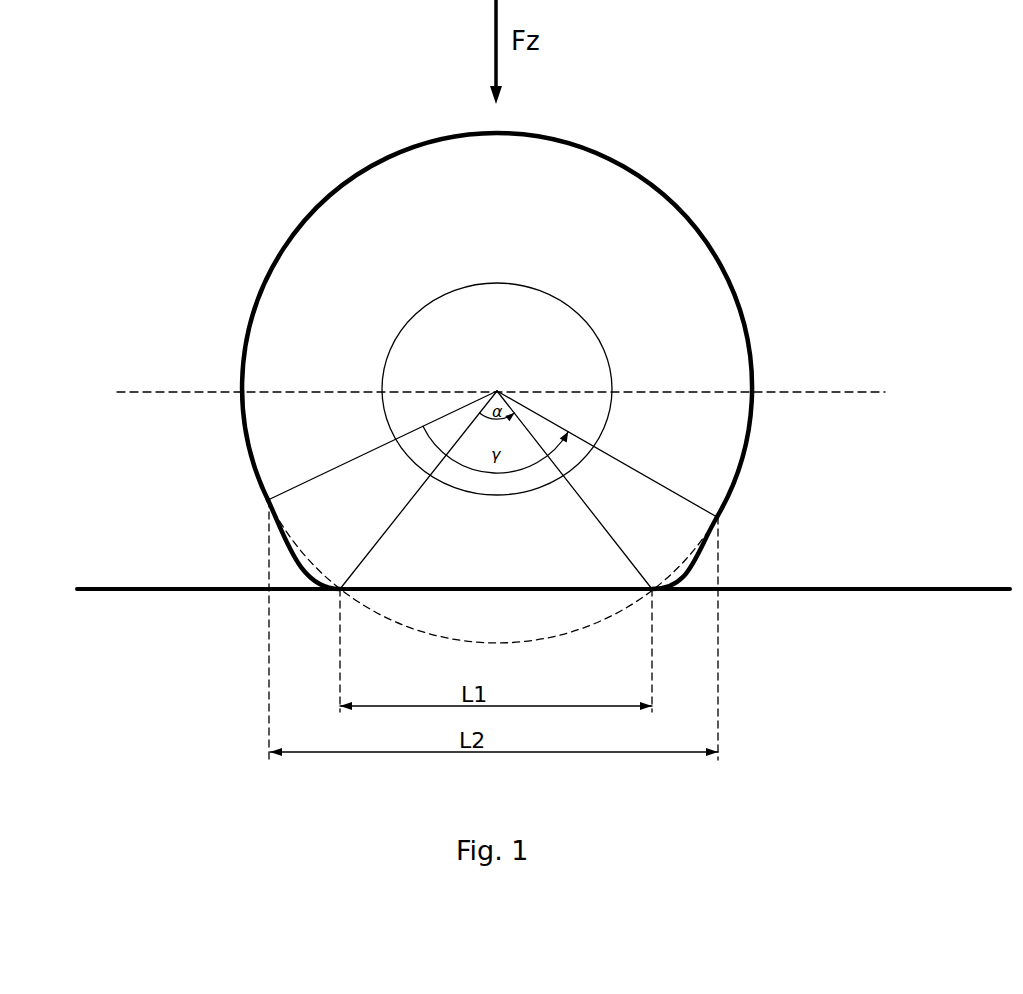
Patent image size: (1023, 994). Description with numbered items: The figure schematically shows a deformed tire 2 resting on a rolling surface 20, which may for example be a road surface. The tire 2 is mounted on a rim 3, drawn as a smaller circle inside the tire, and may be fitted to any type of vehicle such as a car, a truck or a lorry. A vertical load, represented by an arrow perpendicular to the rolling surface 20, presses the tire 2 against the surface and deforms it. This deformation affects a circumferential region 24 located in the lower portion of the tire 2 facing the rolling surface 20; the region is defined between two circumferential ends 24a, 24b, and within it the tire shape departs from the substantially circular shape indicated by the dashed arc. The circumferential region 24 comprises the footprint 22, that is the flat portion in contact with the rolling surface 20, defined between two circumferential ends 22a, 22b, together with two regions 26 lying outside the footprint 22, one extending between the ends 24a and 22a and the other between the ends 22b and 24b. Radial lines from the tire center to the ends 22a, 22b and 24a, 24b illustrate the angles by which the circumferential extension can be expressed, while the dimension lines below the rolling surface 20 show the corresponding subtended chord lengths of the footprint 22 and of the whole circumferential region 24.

The tire 2 is at (532, 325).
The rim 3 is at (509, 377).
The rolling surface 20 is at (543, 555).
The footprint 22 is at (496, 562).
The circumferential region 24 is at (422, 571).
The regions external to the footprint 26 is at (752, 553).
The circumferential end of footprint 22a is at (341, 551).
The circumferential end of footprint 22b is at (654, 551).
The circumferential end of circumferential region 24a is at (312, 575).
The circumferential end of circumferential region 24b is at (673, 575).